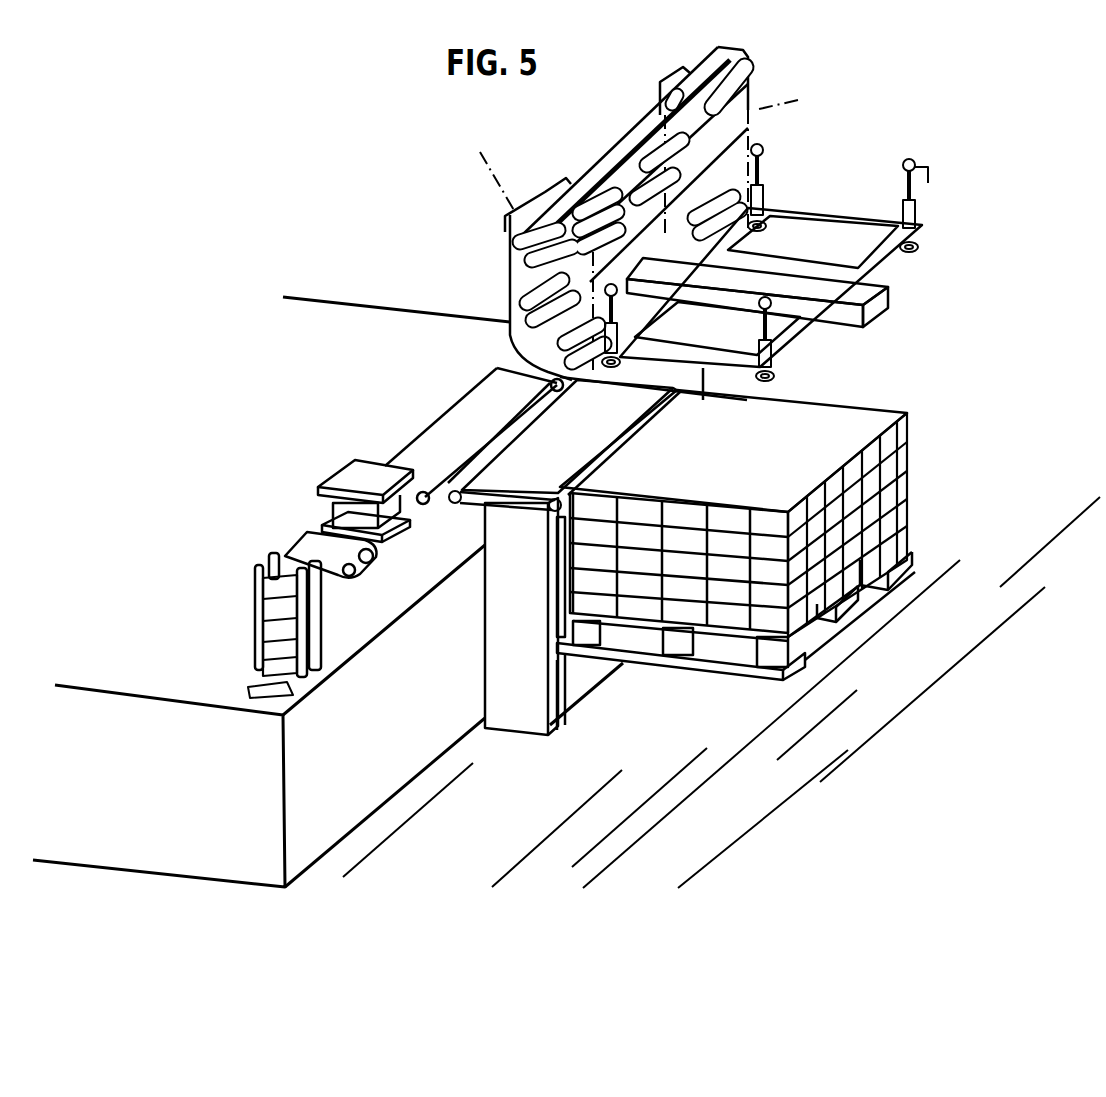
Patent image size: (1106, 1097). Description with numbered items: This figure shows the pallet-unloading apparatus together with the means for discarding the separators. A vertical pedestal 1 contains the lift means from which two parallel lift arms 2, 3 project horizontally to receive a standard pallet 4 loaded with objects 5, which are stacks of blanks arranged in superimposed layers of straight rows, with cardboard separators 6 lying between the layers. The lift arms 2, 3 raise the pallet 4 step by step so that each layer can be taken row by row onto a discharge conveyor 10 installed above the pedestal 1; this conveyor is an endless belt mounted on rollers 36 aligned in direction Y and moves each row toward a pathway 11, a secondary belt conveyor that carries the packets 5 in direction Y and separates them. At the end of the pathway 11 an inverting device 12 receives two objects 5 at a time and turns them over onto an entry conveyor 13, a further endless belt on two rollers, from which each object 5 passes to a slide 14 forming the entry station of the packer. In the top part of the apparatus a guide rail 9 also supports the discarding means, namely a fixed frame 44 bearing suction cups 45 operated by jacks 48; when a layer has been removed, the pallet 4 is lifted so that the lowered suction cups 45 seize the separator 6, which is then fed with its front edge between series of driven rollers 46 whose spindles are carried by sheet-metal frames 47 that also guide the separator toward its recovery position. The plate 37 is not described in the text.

The vertical pedestal 1 is at (500, 628).
The lift arm 2 is at (800, 662).
The lift arm 3 is at (905, 580).
The pallet 4 is at (905, 555).
The objects 5 is at (275, 623).
The separator 6 is at (725, 468).
The guide rail 9 is at (895, 297).
The discharge conveyor 10 is at (484, 525).
The pathway 11 is at (425, 445).
The inverting device 12 is at (335, 478).
The entry conveyor 13 is at (300, 548).
The slide 14 is at (255, 640).
The rollers 36 is at (455, 503).
The transfer plate 37 is at (575, 472).
The fixed frame 44 is at (855, 210).
The suction cups 45 is at (920, 248).
The rollers 46 is at (518, 243).
The sheet-metal frames 47 is at (646, 213).
The jacks 48 is at (917, 222).